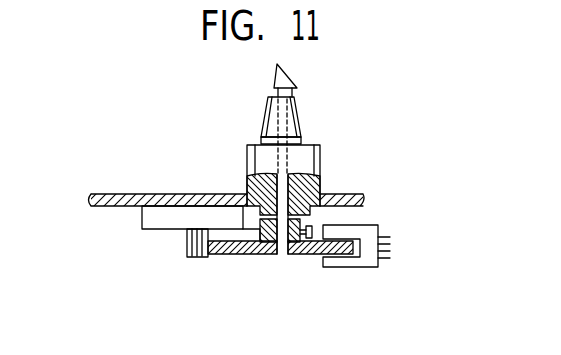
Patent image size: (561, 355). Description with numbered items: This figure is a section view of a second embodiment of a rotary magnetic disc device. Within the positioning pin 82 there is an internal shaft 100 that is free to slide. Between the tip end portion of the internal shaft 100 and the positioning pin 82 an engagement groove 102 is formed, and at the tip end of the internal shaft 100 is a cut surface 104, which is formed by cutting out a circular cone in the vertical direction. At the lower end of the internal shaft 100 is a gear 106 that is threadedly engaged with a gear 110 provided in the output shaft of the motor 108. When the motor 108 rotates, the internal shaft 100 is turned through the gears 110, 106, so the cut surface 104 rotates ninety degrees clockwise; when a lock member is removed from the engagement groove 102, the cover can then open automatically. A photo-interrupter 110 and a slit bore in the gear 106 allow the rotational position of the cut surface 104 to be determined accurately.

The positioning pin 82 is at (307, 162).
The internal shaft 100 is at (253, 192).
The engagement groove 102 is at (295, 95).
The cut surface 104 is at (274, 76).
The gear 106 is at (235, 255).
The motor 108 is at (157, 222).
The gear 110 is at (187, 256).